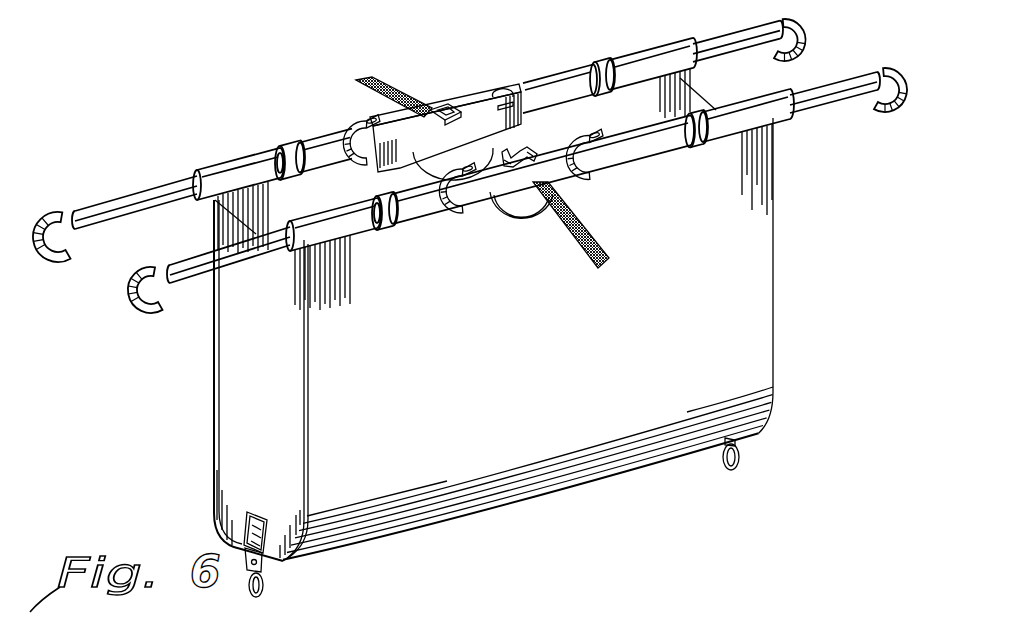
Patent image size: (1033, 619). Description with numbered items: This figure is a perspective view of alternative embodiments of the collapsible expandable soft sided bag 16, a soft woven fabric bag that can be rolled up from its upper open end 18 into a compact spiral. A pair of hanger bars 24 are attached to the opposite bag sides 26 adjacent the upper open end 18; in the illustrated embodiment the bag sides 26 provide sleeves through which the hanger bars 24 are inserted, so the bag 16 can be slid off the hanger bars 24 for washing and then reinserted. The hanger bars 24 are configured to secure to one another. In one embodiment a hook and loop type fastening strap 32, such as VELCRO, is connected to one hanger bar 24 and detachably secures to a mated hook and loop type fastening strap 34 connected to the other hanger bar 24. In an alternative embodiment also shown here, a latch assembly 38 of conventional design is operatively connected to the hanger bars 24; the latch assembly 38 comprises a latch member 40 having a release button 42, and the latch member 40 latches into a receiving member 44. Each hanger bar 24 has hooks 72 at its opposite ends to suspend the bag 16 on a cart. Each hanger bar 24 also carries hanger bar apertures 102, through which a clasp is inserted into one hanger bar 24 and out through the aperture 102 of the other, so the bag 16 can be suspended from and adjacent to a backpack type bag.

The collapsible expandable soft sided bag 16 is at (753, 232).
The upper open end 18 is at (650, 107).
The hanger bars 24 is at (143, 190).
The bag sides 26 is at (273, 210).
The hook and loop type fastening strap 32 is at (577, 242).
The mated hook and loop type fastening strap 34 is at (378, 82).
The latch assembly 38 is at (450, 80).
The latch member 40 is at (503, 95).
The release button 42 is at (435, 103).
The receiving member 44 is at (525, 167).
The hooks 72 is at (883, 68).
The hanger bar apertures 102 is at (352, 112).